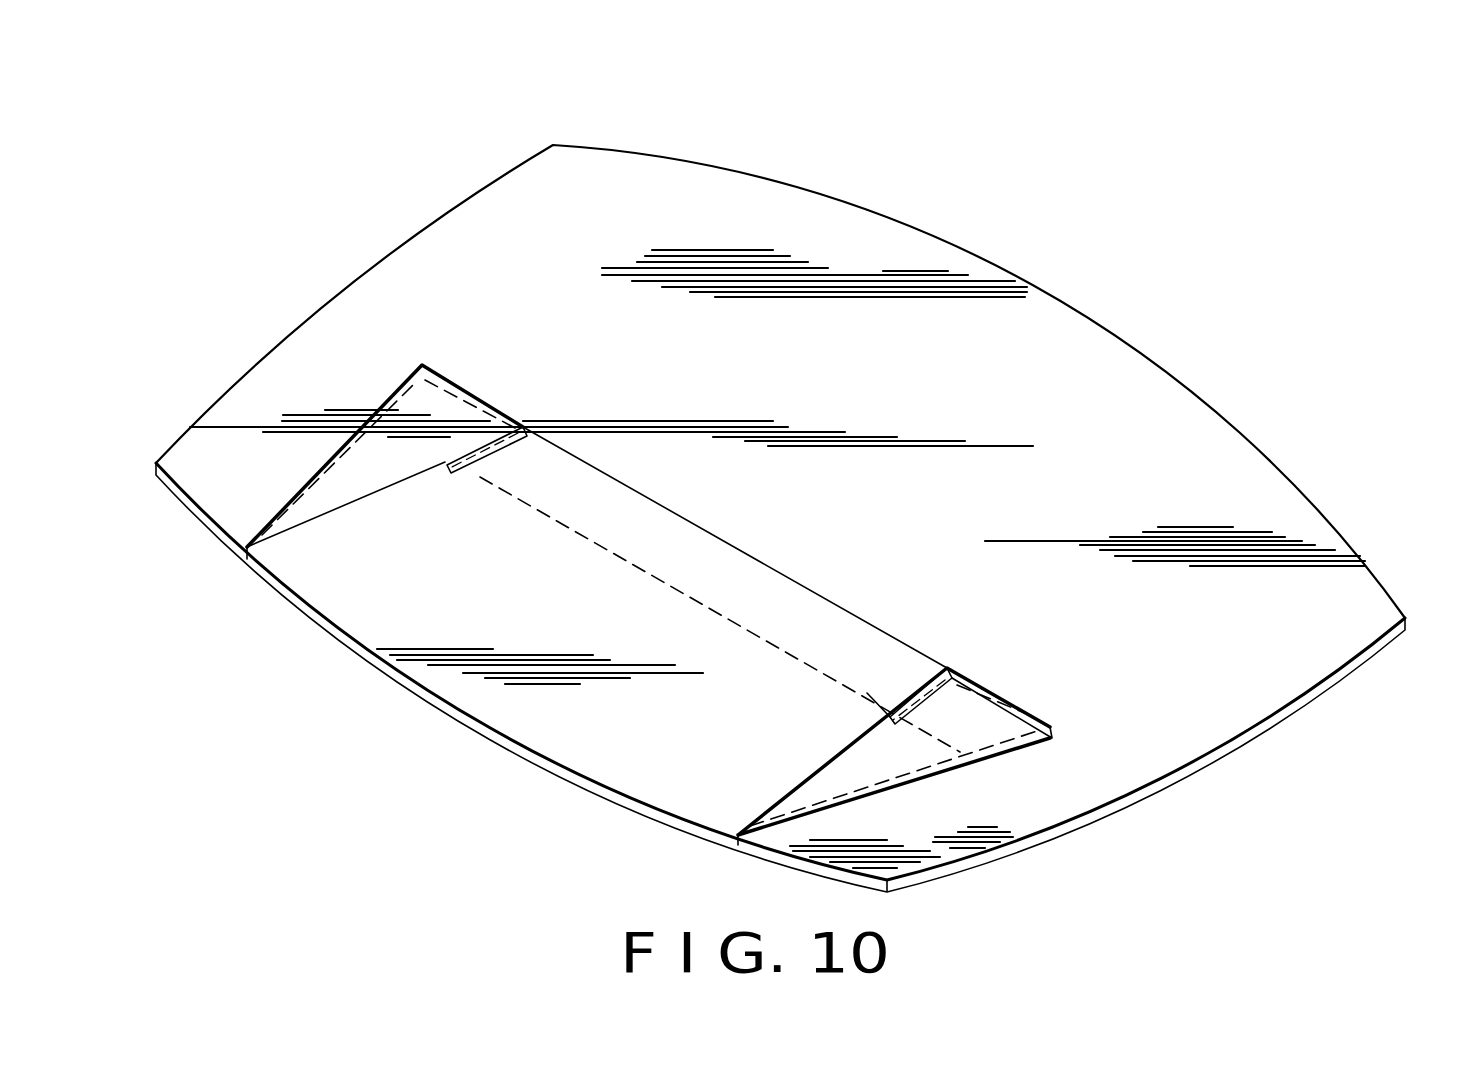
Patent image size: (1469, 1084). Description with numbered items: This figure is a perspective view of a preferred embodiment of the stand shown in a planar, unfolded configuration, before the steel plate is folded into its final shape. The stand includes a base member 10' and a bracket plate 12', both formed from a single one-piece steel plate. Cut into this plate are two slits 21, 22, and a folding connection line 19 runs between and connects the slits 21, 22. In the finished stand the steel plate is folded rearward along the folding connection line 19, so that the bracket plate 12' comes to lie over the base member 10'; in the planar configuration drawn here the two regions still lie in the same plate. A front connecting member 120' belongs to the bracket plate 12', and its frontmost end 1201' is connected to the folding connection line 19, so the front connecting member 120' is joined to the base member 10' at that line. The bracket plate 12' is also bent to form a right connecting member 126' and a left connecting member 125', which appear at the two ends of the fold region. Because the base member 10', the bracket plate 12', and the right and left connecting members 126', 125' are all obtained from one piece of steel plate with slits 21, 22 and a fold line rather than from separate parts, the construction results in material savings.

The base member 10' is at (780, 512).
The bracket plate 12' is at (780, 677).
The folding connection line 19 is at (742, 547).
The slit 21 is at (343, 460).
The slit 22 is at (900, 773).
The front connecting member 120' is at (737, 575).
The left connecting member 125' is at (385, 436).
The right connecting member 126' is at (909, 737).
The frontmost end 1201' is at (720, 614).